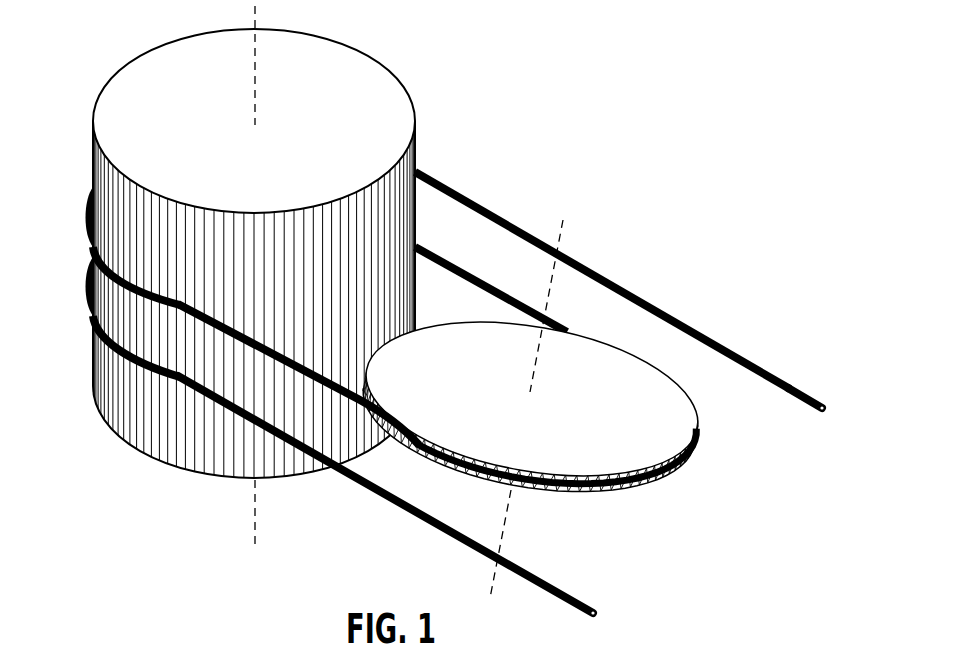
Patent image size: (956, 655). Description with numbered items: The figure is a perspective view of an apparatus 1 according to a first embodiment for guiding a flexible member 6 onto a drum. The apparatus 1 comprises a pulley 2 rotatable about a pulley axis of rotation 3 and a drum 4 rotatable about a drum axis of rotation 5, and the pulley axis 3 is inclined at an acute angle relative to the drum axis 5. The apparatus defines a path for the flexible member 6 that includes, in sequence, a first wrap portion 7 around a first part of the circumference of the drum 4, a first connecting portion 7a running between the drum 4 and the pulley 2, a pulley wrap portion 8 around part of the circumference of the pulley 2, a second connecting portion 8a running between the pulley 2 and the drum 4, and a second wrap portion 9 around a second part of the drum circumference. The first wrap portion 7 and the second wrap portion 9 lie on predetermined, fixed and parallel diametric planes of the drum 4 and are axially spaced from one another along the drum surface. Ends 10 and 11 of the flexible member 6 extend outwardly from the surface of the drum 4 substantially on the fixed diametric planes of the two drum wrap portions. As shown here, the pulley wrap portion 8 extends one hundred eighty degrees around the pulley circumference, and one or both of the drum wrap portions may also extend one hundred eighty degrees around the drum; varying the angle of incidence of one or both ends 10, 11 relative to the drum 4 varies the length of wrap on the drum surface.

The apparatus 1 is at (561, 112).
The pulley 2 is at (661, 420).
The pulley axis of rotation 3 is at (559, 236).
The drum 4 is at (328, 97).
The drum axis of rotation 5 is at (256, 22).
The flexible member 6 is at (645, 302).
The first wrap portion 7 is at (91, 213).
The first connecting portion 7a is at (245, 343).
The pulley wrap portion 8 is at (683, 466).
The second connecting portion 8a is at (458, 263).
The second wrap portion 9 is at (91, 281).
The end of flexible member 10 is at (811, 400).
The end of flexible member 11 is at (581, 602).